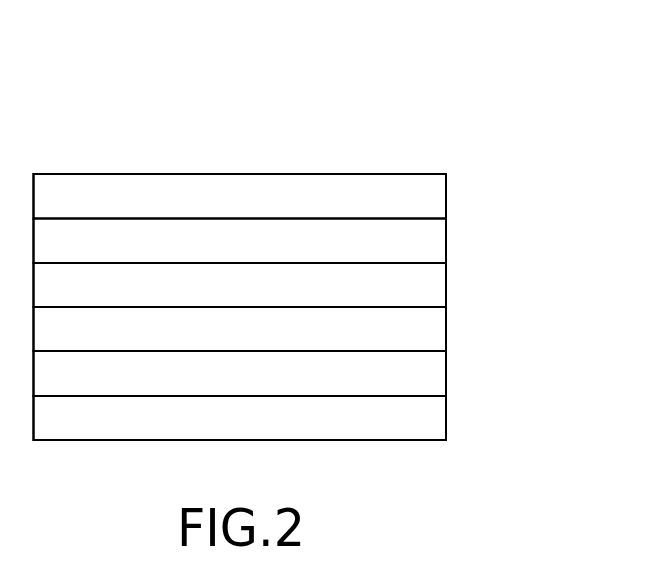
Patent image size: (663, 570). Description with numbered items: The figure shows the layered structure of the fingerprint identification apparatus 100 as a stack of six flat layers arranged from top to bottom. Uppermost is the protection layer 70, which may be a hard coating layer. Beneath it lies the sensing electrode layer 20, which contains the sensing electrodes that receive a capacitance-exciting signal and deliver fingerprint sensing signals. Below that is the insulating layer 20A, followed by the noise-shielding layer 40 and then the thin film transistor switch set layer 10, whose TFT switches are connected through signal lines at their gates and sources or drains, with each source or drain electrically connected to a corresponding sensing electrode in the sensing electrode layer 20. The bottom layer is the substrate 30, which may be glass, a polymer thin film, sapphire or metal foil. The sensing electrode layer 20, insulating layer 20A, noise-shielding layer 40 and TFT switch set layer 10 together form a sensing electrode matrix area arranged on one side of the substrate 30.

The fingerprint identification apparatus 100 is at (260, 40).
The protection layer 70 is at (441, 196).
The sensing electrode layer 20 is at (441, 241).
The insulating layer 20A is at (441, 286).
The noise-shielding layer 40 is at (441, 329).
The thin film transistor switch set layer 10 is at (441, 374).
The substrate 30 is at (441, 419).